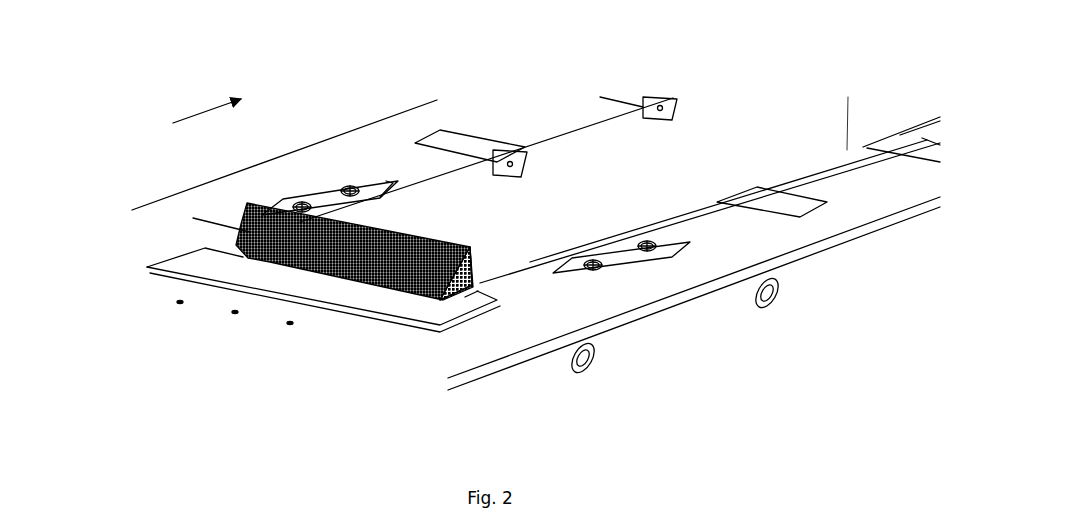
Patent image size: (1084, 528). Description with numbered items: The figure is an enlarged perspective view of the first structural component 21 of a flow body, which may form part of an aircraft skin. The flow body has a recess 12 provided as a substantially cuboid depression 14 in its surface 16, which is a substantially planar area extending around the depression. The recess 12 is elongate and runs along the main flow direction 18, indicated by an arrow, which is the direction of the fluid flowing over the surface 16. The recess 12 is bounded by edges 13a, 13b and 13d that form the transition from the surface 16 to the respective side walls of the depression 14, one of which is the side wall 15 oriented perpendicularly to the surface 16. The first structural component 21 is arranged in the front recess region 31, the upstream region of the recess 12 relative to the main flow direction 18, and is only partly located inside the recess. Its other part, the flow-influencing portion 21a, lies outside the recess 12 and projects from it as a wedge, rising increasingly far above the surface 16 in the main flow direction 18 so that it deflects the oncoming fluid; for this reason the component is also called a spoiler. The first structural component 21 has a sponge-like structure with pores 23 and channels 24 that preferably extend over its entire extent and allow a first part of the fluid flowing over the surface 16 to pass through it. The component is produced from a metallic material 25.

The recess 12 is at (560, 170).
The depression 14 is at (710, 211).
The edge 13a is at (322, 277).
The edge 13b is at (423, 183).
The edge 13d is at (643, 258).
The side wall 15 is at (667, 137).
The surface 16 is at (475, 123).
The main flow direction 18 is at (194, 112).
The first structural component 21 is at (253, 232).
The flow-influencing portion 21a is at (223, 250).
The pores 23 is at (273, 247).
The channels 24 is at (297, 255).
The metallic material 25 is at (397, 270).
The front recess region 31 is at (466, 297).